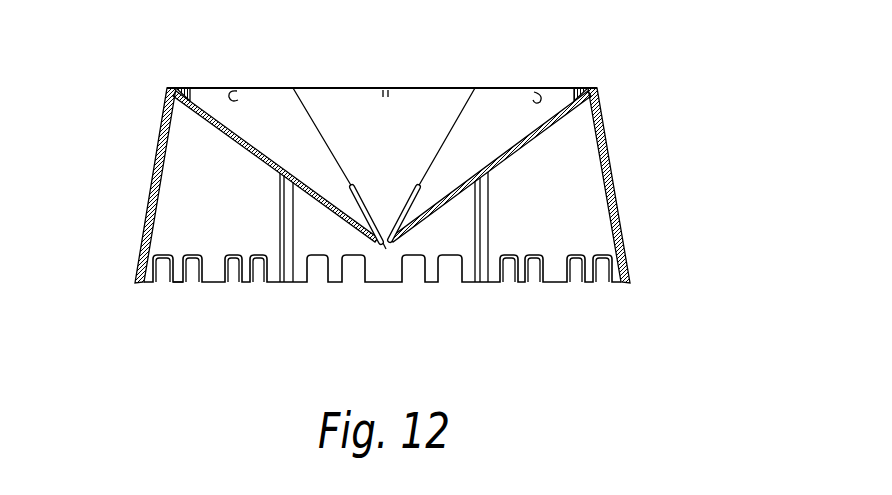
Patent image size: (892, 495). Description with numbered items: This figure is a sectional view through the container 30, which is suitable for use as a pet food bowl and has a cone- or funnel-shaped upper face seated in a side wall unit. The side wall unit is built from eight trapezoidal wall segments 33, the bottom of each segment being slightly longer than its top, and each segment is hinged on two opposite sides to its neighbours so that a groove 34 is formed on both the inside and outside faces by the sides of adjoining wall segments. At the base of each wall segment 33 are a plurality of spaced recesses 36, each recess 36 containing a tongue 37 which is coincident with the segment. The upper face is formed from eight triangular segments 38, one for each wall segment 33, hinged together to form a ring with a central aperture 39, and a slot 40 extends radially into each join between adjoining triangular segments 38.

The container 30 is at (688, 79).
The wall segment 33 is at (182, 192).
The groove 34 is at (480, 267).
The recess 36 is at (165, 281).
The tongue 37 is at (177, 281).
The triangular segment 38 is at (433, 107).
The central aperture 39 is at (385, 246).
The slot 40 is at (370, 213).